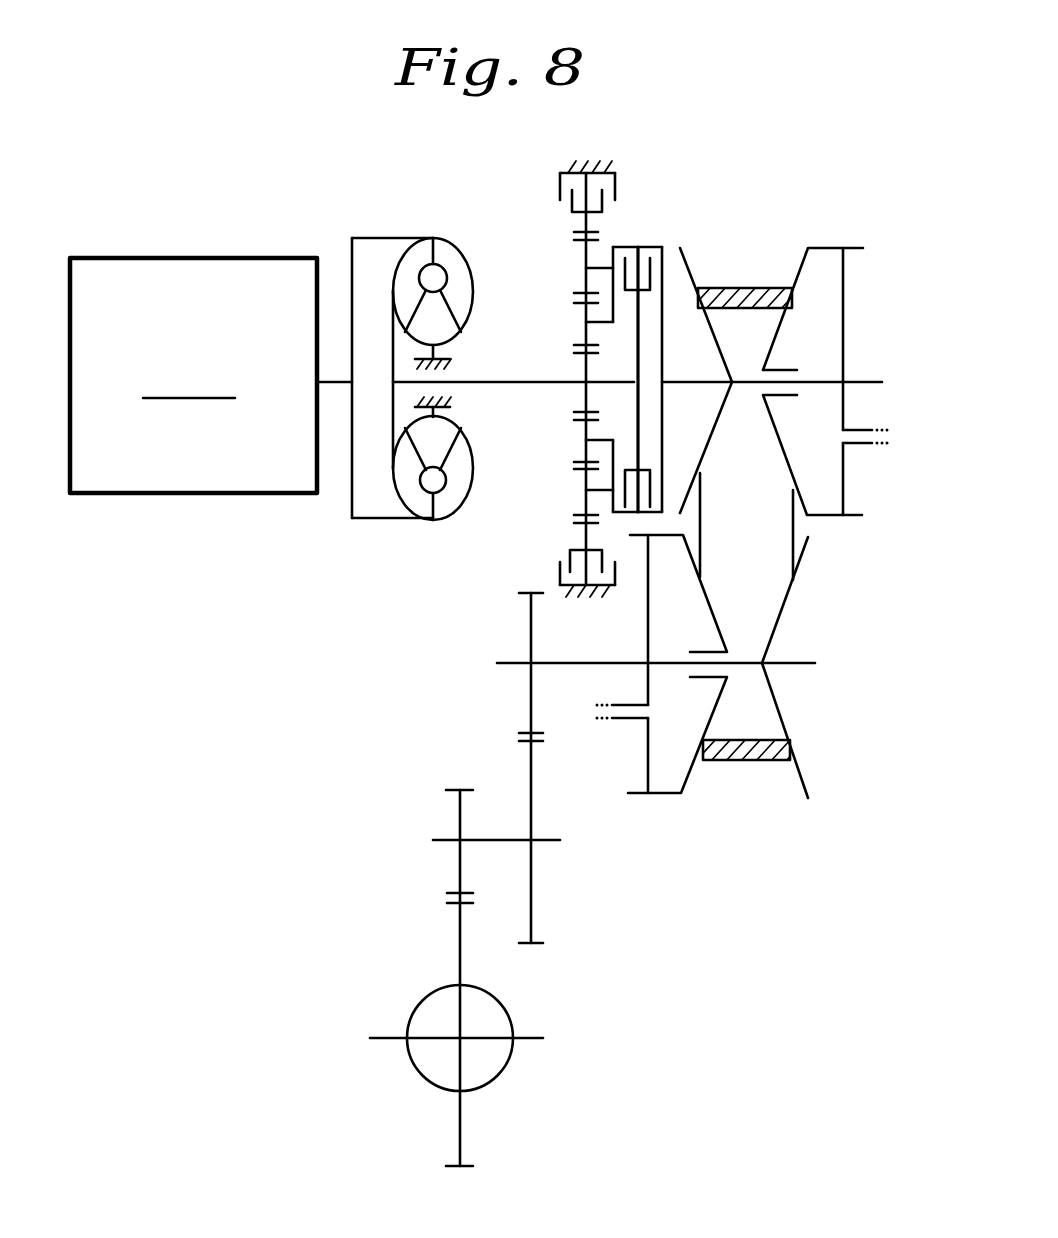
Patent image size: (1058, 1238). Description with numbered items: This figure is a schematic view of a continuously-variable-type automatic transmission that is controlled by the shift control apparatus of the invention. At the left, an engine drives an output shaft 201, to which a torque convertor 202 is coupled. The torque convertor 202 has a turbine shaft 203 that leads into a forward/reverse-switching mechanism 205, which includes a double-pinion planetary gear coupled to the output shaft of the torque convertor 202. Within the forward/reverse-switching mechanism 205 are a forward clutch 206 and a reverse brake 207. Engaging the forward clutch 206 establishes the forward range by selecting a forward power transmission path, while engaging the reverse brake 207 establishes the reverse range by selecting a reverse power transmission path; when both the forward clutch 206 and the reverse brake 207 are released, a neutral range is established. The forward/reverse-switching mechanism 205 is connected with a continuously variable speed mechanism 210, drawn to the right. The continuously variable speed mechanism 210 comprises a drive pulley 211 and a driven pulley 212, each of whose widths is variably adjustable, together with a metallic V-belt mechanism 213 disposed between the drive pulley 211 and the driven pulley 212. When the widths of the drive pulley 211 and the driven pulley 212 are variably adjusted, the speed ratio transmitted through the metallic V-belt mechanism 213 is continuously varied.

The output shaft 201 is at (330, 375).
The torque convertor 202 is at (430, 214).
The turbine shaft 203 is at (504, 384).
The forward/reverse-switching mechanism 205 is at (556, 268).
The forward clutch 206 is at (643, 247).
The reverse brake 207 is at (617, 186).
The continuously variable speed mechanism 210 is at (818, 236).
The drive pulley 211 is at (800, 267).
The driven pulley 212 is at (693, 775).
The metallic V-belt mechanism 213 is at (777, 533).